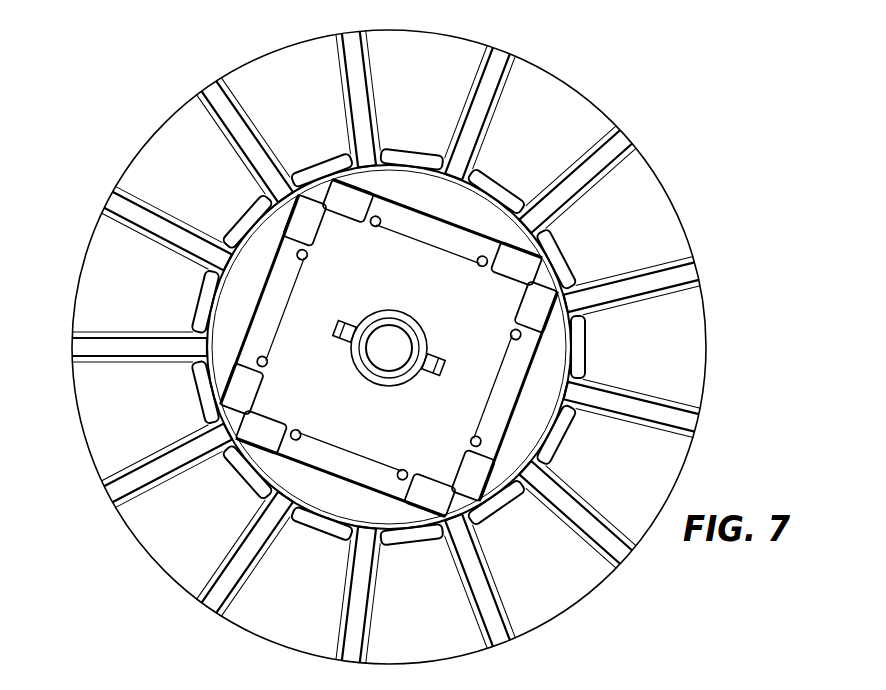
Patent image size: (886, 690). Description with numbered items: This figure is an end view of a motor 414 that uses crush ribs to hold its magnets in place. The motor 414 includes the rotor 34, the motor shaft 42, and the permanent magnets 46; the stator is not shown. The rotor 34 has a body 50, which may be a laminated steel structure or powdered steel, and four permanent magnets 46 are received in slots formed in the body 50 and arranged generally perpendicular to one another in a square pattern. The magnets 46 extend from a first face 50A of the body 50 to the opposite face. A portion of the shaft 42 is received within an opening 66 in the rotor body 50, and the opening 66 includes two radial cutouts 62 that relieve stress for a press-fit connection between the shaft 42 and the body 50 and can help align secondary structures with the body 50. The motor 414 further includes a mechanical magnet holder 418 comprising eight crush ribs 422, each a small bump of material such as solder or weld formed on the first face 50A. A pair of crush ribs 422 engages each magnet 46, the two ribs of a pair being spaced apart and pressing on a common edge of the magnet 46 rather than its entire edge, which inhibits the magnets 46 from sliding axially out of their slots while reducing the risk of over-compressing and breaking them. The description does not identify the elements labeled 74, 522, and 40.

The motor 414 is at (711, 131).
The stator core 74 is at (172, 170).
The rotor 34 is at (495, 218).
The permanent magnets 46 is at (437, 232).
The crush ribs 422 is at (388, 225).
The motor shaft 42 is at (393, 340).
The radial cutouts 62 is at (345, 330).
The opening 66 is at (332, 328).
The mechanical magnet holder 418 is at (396, 190).
The body 50 is at (525, 525).
The first face 50A is at (278, 470).
The stator lamination 522 is at (233, 684).
The rotor 40 is at (499, 684).